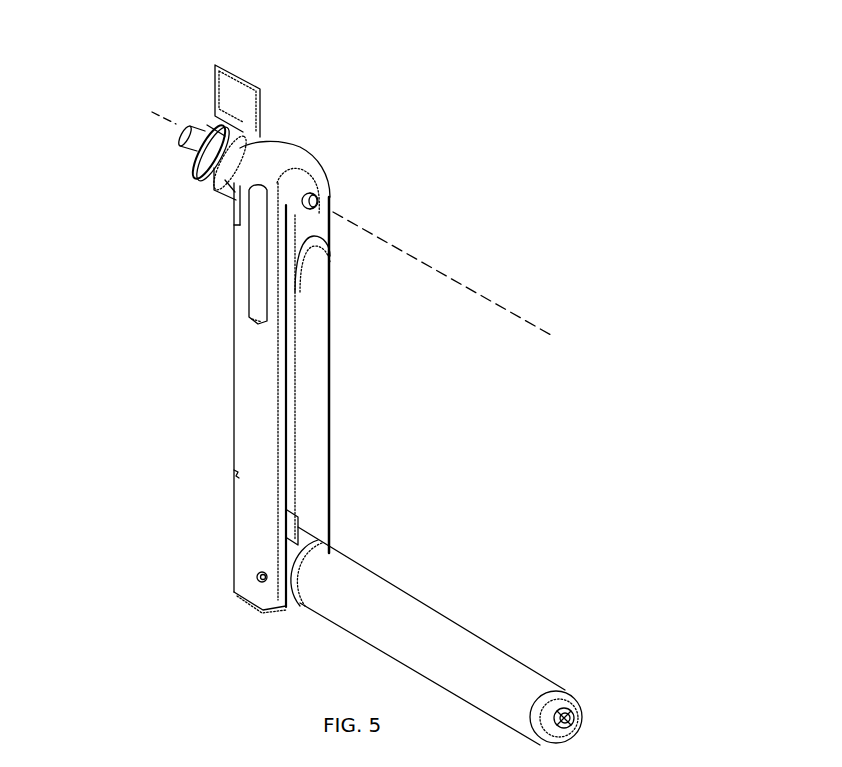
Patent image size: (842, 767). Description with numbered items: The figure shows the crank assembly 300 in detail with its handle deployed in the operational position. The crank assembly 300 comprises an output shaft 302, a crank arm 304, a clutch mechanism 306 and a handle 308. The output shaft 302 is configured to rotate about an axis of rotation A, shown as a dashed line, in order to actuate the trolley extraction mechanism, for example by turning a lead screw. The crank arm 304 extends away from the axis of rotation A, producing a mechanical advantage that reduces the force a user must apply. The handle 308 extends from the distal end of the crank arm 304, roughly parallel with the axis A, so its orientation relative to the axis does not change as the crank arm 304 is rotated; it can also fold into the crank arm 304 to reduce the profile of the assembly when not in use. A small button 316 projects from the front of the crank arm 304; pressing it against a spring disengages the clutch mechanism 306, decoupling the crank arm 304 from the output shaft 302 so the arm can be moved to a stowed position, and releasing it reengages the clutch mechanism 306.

The crank assembly 300 is at (541, 253).
The output shaft 302 is at (193, 130).
The crank arm 304 is at (261, 400).
The clutch mechanism 306 is at (277, 170).
The handle 308 is at (465, 655).
The button 316 is at (319, 198).